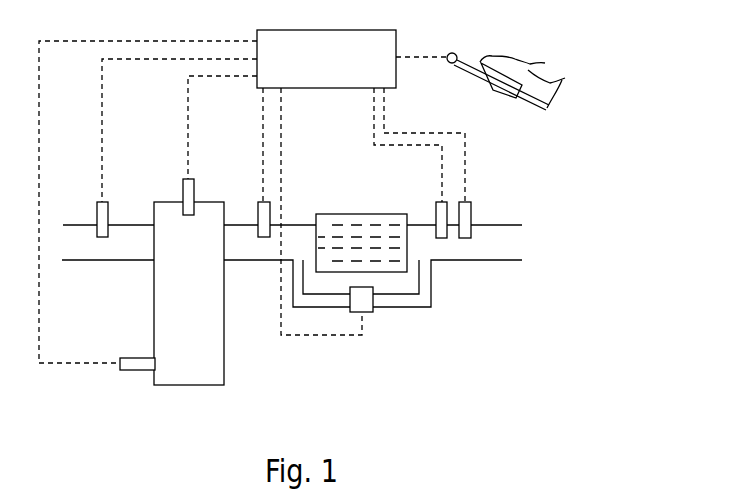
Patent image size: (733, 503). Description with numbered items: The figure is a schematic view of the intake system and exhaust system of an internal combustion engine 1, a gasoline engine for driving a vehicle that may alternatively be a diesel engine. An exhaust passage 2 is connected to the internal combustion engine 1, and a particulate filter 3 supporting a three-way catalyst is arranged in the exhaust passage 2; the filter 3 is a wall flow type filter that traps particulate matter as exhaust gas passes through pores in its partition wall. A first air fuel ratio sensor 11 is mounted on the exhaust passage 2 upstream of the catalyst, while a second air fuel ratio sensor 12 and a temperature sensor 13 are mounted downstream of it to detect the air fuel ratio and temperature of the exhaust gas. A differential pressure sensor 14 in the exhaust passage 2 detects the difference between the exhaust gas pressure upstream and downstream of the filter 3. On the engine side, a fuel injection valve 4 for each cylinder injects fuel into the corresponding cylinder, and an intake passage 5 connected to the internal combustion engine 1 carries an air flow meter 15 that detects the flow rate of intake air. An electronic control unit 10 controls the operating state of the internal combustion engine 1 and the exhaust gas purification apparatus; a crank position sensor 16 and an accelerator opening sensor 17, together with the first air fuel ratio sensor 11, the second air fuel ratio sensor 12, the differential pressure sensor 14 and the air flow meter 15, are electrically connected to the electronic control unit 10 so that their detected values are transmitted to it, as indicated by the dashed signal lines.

The internal combustion engine 1 is at (221, 293).
The exhaust passage 2 is at (243, 262).
The particulate filter 3 is at (333, 213).
The fuel injection valve 4 is at (182, 200).
The intake passage 5 is at (102, 262).
The electronic control unit 10 is at (262, 88).
The first air fuel ratio sensor 11 is at (258, 213).
The second air fuel ratio sensor 12 is at (436, 208).
The temperature sensor 13 is at (472, 213).
The differential pressure sensor 14 is at (373, 312).
The air flow meter 15 is at (97, 207).
The crank position sensor 16 is at (138, 358).
The accelerator opening sensor 17 is at (448, 63).